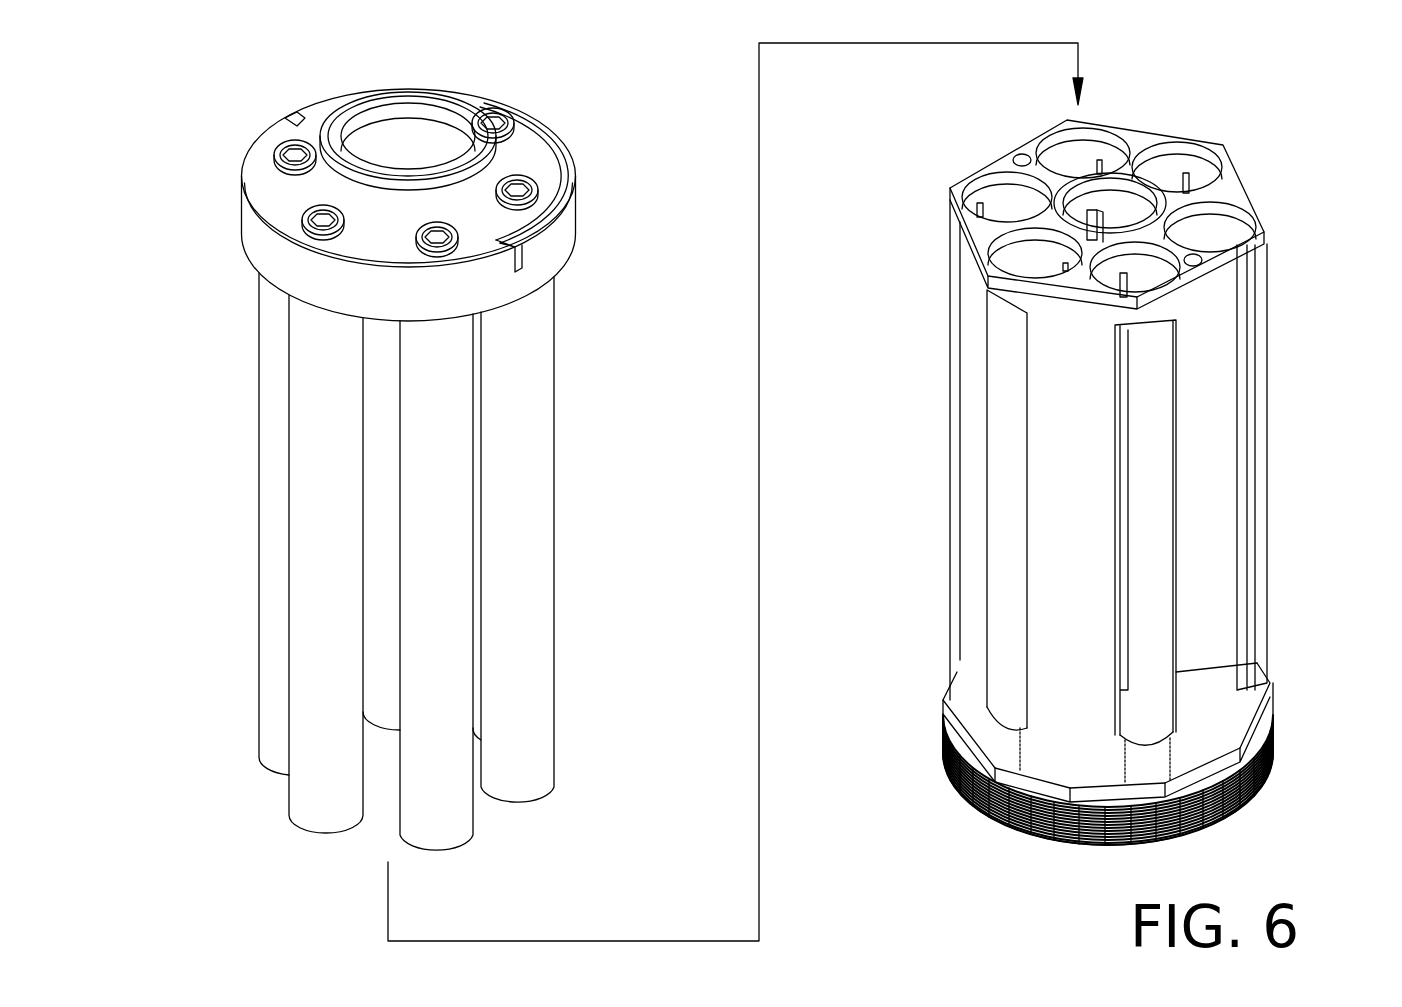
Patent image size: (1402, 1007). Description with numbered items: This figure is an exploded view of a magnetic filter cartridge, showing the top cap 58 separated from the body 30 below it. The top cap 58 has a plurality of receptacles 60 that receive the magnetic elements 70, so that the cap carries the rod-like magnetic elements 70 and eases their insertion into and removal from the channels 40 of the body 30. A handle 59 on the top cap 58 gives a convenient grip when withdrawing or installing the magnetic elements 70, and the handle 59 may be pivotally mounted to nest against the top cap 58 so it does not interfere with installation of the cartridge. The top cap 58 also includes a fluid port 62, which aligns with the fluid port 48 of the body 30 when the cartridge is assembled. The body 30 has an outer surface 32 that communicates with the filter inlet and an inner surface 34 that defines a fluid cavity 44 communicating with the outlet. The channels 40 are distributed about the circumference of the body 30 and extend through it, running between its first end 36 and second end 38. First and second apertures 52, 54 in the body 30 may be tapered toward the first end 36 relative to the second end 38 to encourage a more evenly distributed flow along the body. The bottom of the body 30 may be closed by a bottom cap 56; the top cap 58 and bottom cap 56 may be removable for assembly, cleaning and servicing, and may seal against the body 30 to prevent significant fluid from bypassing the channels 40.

The body 30 is at (1270, 253).
The outer surface 32 is at (1225, 545).
The inner surface 34 is at (1078, 229).
The first end 36 is at (1248, 197).
The second end 38 is at (1223, 740).
The channels 40 is at (1177, 152).
The fluid cavity 44 is at (1007, 263).
The fluid port 48 is at (1188, 183).
The first aperture 52 is at (1250, 662).
The second aperture 54 is at (1060, 210).
The bottom cap 56 is at (970, 802).
The top cap 58 is at (303, 278).
The handle 59 is at (543, 130).
The receptacles 60 is at (554, 320).
The fluid port 62 is at (367, 160).
The magnetic elements 70 is at (542, 580).